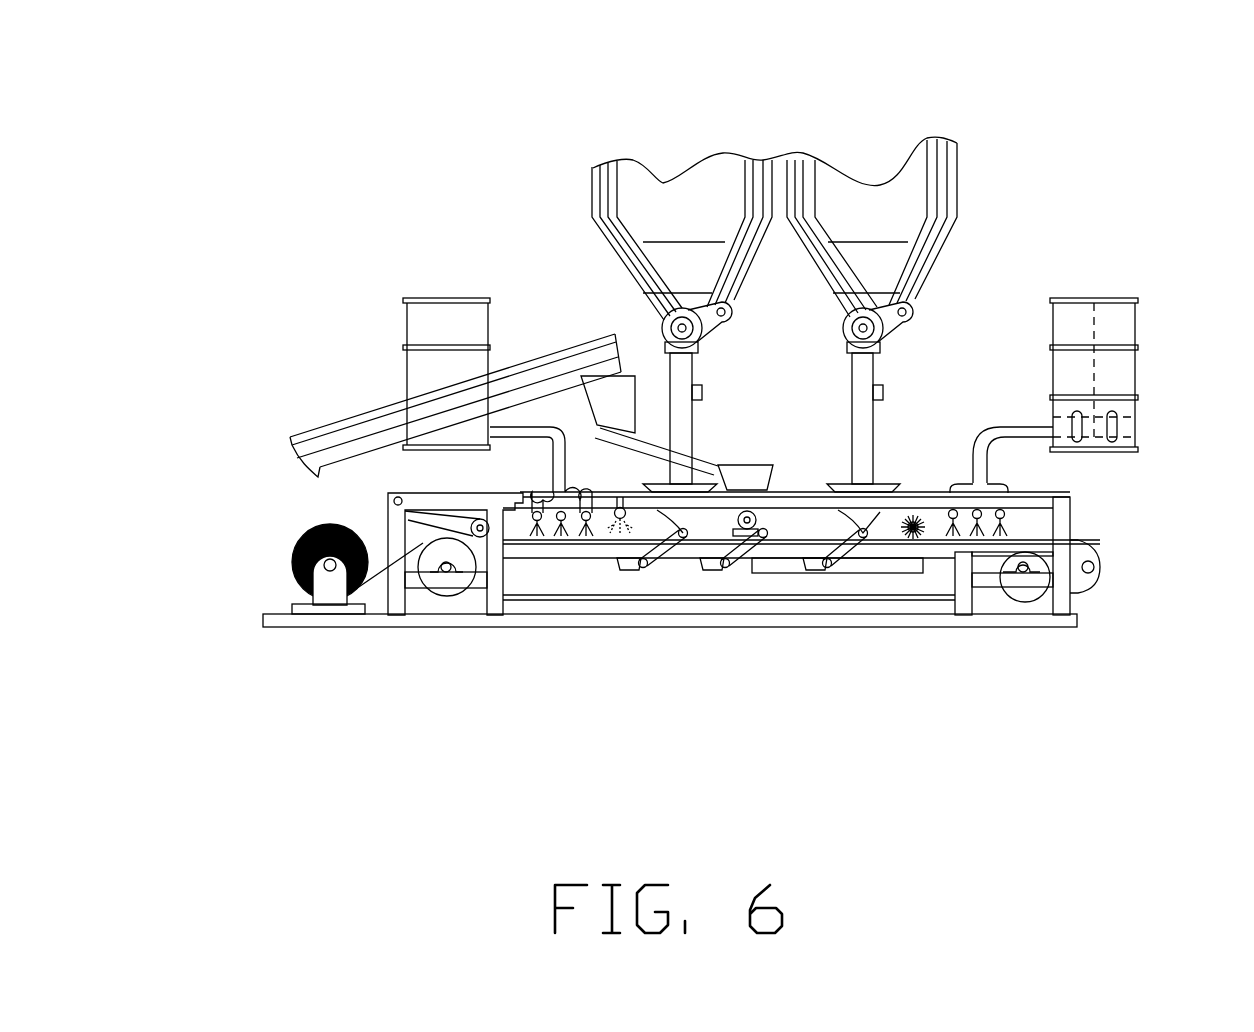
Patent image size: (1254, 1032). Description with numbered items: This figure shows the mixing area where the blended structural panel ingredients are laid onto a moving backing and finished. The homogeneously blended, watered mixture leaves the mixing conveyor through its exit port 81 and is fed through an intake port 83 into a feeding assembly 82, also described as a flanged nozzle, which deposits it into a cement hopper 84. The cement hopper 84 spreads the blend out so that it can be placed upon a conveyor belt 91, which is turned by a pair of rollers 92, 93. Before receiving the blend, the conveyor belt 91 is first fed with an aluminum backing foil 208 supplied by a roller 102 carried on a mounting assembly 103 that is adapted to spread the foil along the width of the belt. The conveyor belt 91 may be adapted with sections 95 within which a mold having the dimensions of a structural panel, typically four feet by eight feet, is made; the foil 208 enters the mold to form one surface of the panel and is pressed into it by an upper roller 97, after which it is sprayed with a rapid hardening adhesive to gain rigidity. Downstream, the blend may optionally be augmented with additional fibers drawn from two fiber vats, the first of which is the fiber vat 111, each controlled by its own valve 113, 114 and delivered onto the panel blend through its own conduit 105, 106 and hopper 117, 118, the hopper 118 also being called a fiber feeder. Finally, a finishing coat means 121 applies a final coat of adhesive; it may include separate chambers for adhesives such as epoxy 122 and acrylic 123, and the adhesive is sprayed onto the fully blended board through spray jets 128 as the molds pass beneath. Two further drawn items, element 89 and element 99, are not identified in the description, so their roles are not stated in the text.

The exit port 81 is at (705, 398).
The feeding assembly 82 is at (680, 432).
The intake port 83 is at (567, 467).
The cement hopper 84 is at (790, 557).
The hopper 89 is at (590, 374).
The conveyor belt 91 is at (987, 593).
The roller 92 is at (452, 594).
The roller 93 is at (1023, 590).
The sections 95 is at (615, 558).
The upper roller 97 is at (848, 556).
The support 99 is at (928, 544).
The roller 102 is at (330, 593).
The mounting assembly 103 is at (493, 583).
The conduit 105 is at (597, 455).
The conduit 106 is at (877, 388).
The fiber vat 111 is at (682, 240).
The valve 113 is at (637, 317).
The valve 114 is at (913, 347).
The hopper 117 is at (703, 528).
The hopper 118 is at (910, 540).
The finishing coat means 121 is at (407, 320).
The epoxy 122 is at (633, 313).
The acrylic 123 is at (530, 496).
The spray jets 128 is at (560, 528).
The aluminum backing foil 208 is at (297, 547).